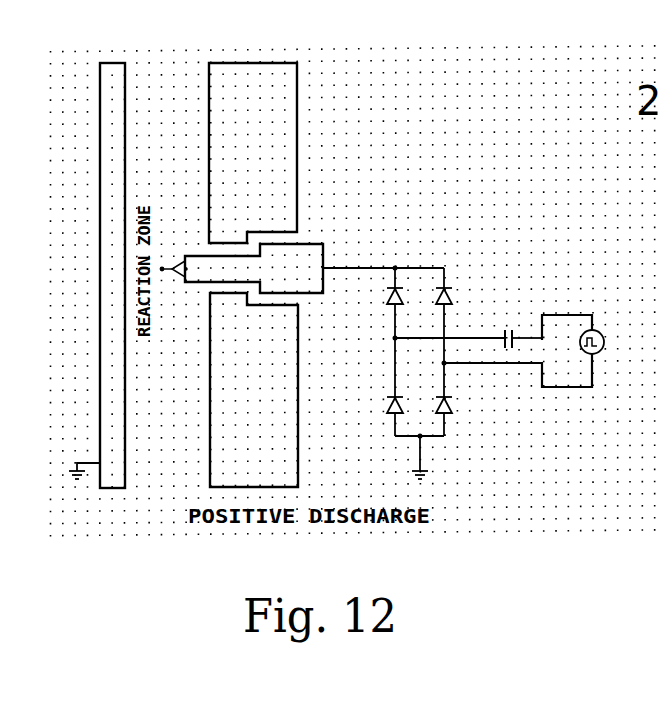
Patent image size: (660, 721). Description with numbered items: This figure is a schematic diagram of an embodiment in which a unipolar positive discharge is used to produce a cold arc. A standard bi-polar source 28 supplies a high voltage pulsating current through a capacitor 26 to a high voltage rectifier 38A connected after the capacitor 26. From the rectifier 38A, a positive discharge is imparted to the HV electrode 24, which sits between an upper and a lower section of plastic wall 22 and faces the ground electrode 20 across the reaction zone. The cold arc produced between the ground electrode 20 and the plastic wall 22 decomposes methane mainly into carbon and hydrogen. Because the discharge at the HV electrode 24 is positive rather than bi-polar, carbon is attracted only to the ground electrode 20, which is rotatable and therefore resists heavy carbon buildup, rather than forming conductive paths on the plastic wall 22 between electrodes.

The ground electrode 20 is at (112, 383).
The plastic wall 22 is at (280, 110).
The HV electrode 24 is at (300, 252).
The capacitor 26 is at (503, 332).
The bi-polar source 28 is at (601, 351).
The high voltage rectifier 38A is at (460, 422).